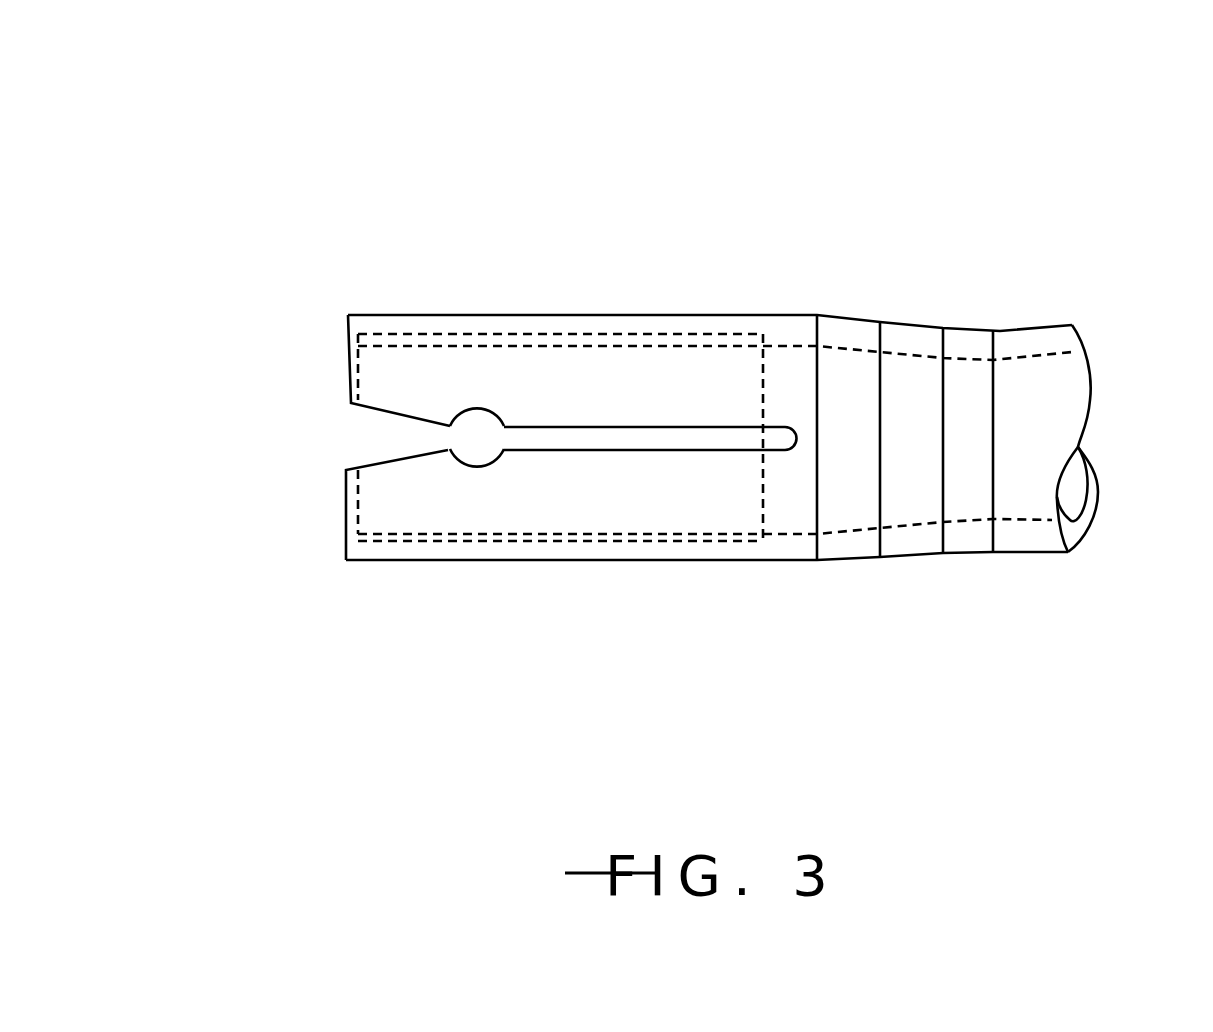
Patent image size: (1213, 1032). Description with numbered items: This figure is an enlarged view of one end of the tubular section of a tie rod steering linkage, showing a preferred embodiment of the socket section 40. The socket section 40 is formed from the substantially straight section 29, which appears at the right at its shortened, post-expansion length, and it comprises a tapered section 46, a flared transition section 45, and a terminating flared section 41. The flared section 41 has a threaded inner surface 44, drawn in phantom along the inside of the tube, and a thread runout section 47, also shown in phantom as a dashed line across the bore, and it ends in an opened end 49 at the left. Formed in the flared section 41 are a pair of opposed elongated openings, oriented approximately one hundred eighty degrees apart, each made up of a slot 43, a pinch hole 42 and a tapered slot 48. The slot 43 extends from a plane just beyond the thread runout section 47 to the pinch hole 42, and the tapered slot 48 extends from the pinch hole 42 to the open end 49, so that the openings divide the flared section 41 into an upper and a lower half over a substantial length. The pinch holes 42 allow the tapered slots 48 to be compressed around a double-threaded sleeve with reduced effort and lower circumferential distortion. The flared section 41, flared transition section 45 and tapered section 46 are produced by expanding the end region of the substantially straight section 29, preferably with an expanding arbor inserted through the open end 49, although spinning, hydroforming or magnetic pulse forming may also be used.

The socket section 40 is at (671, 354).
The flared section 41 is at (663, 315).
The pinch holes 42 is at (466, 466).
The slots 43 is at (613, 453).
The threaded inner surface 44 is at (532, 338).
The flared transition section 45 is at (852, 317).
The tapered section 46 is at (912, 560).
The thread runout section 47 is at (763, 340).
The tapered slots 48 is at (382, 452).
The opened end 49 is at (348, 380).
The substantially straight section 29 is at (968, 560).